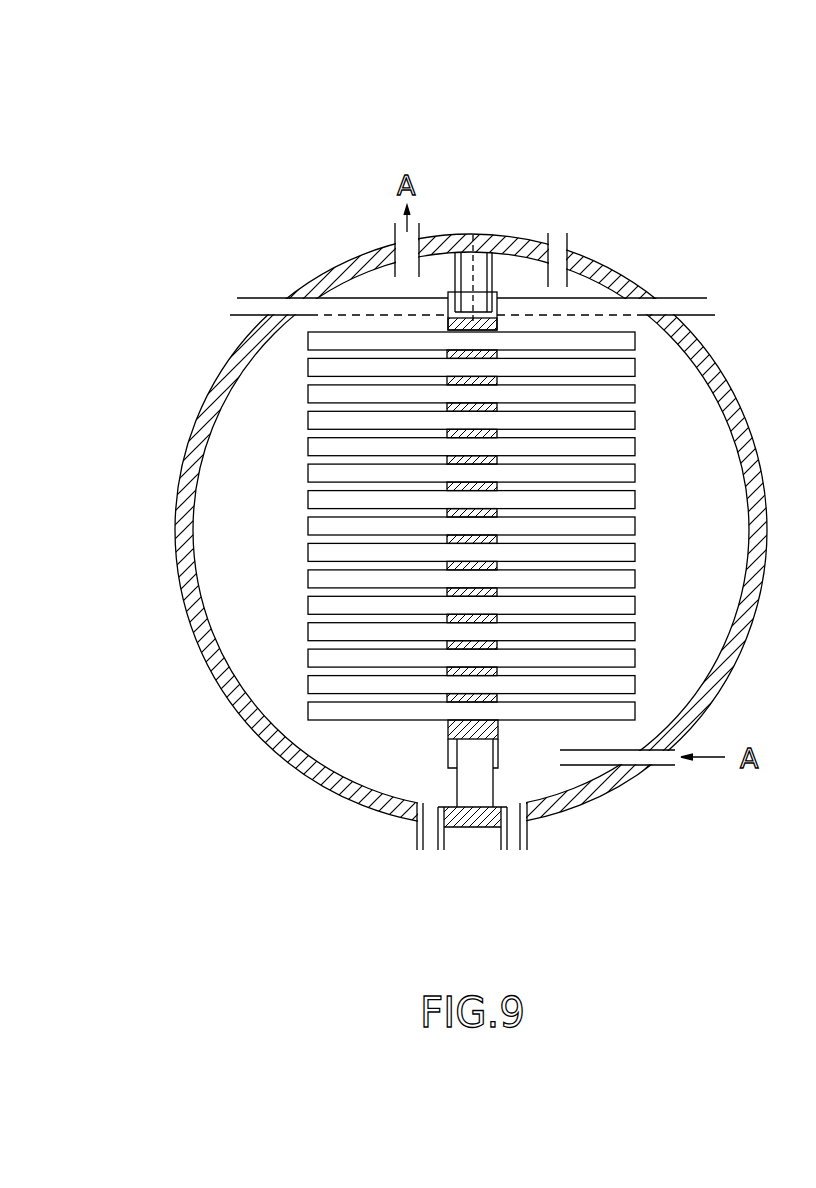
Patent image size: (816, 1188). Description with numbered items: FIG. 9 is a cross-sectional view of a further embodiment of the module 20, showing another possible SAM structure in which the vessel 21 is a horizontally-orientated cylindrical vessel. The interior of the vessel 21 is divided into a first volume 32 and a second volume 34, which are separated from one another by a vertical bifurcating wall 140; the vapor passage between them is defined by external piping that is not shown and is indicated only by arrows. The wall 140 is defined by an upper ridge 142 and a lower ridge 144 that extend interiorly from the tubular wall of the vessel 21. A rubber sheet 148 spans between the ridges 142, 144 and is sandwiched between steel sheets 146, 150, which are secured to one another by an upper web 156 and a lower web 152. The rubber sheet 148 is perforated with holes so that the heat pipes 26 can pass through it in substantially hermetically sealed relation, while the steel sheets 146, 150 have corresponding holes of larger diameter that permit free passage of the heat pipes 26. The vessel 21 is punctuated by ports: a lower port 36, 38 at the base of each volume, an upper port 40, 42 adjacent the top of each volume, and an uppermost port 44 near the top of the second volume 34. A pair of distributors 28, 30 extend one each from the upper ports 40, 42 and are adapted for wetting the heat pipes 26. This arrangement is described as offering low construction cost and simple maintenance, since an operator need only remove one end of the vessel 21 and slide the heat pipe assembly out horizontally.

The module 20 is at (656, 68).
The vessel 21 is at (178, 528).
The heat pipes 26 is at (308, 470).
The distributor 28 is at (362, 305).
The distributor 30 is at (598, 305).
The first volume 32 is at (273, 579).
The second volume 34 is at (708, 576).
The lower port 36 is at (394, 130).
The lower port 38 is at (516, 868).
The upper port 40 is at (237, 300).
The upper port 42 is at (708, 300).
The uppermost port 44 is at (558, 212).
The vertical bifurcating wall 140 is at (395, 785).
The upper ridge 142 is at (485, 292).
The lower ridge 144 is at (473, 790).
The steel sheet 146 is at (499, 730).
The rubber sheet 148 is at (447, 742).
The steel sheet 150 is at (448, 730).
The lower web 152 is at (476, 748).
The upper web 156 is at (475, 262).